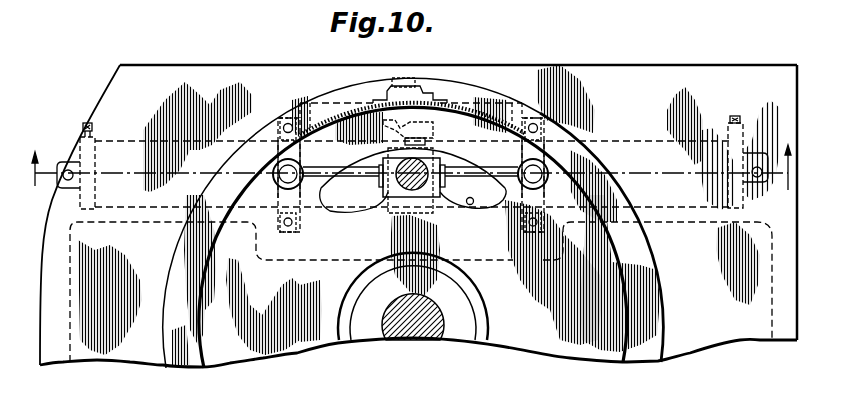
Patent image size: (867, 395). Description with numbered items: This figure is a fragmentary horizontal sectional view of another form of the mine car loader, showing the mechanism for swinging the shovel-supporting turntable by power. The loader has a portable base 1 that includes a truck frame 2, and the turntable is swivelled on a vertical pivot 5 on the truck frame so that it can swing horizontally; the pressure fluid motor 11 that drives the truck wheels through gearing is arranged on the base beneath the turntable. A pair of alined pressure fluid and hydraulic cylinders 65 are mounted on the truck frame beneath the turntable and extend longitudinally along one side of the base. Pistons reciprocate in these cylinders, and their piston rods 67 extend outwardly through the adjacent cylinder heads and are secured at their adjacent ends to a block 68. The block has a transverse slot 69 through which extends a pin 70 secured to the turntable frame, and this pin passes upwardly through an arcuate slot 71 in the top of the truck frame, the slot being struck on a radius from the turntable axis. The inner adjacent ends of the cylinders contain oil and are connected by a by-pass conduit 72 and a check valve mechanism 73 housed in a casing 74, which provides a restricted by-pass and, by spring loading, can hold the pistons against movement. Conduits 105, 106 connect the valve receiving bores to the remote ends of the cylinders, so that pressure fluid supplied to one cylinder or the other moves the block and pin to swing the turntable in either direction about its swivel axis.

The portable base 1 is at (40, 352).
The truck frame 2 is at (737, 338).
The vertical pivot 5 is at (417, 330).
The pressure fluid motor 11 is at (411, 173).
The pressure fluid and hydraulic cylinders 65 is at (192, 142).
The piston rods 67 is at (352, 176).
The block 68 is at (388, 196).
The transverse slot 69 is at (426, 182).
The pin 70 is at (416, 192).
The arcuate slot 71 is at (470, 205).
The by-pass conduit 72 is at (340, 102).
The check valve mechanism 73 is at (430, 92).
The casing 74 is at (385, 78).
The conduit 105 is at (84, 124).
The conduit 106 is at (738, 116).